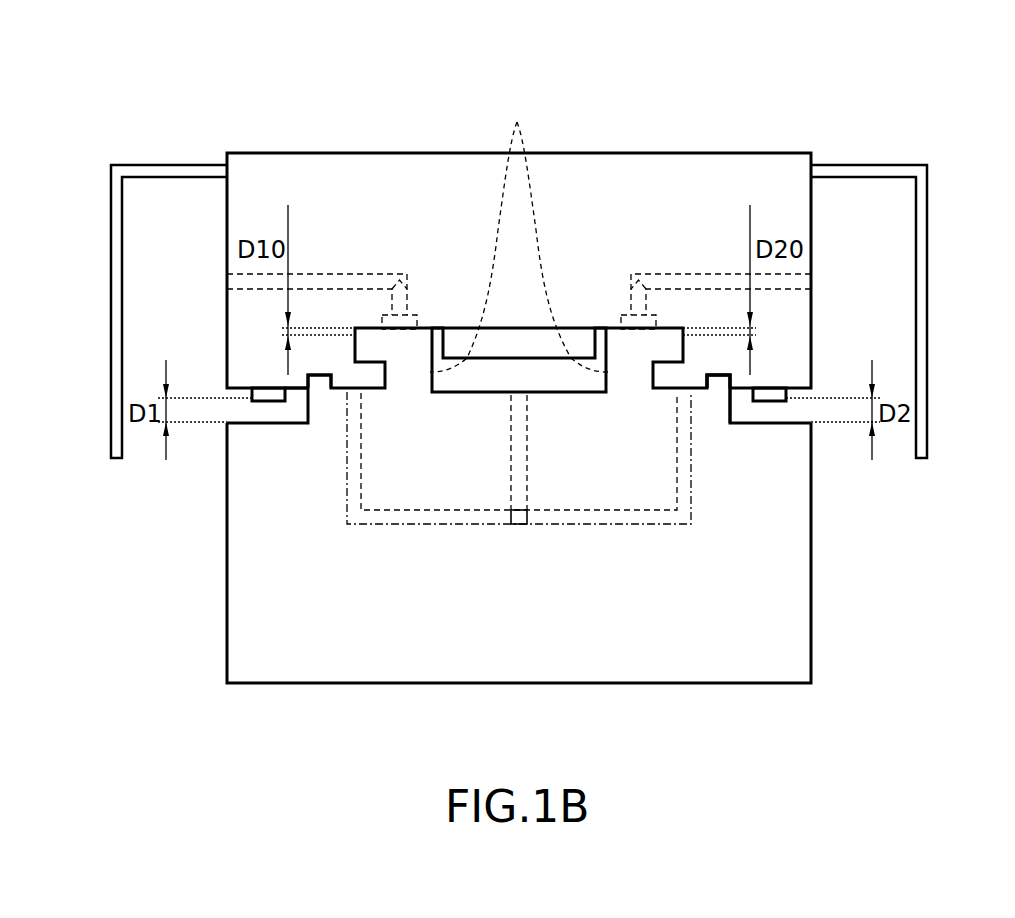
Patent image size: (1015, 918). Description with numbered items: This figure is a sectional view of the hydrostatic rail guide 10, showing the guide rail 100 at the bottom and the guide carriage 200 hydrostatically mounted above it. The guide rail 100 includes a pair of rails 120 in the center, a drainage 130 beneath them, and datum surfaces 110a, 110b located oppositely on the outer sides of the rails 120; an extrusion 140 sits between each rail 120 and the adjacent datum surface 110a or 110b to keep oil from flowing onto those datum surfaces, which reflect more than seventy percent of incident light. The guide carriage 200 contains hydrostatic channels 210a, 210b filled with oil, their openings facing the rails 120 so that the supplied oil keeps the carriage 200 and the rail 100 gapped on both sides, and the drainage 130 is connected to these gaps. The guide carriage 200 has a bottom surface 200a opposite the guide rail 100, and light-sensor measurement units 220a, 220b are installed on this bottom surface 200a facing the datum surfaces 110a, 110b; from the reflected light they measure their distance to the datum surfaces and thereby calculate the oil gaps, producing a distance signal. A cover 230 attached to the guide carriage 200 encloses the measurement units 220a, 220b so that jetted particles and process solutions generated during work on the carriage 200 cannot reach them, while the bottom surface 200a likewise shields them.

The hydrostatic rail guide 10 is at (997, 100).
The guide rail 100 is at (222, 582).
The datum surface 110a is at (250, 422).
The datum surface 110b is at (788, 422).
The rails 120 is at (519, 245).
The drainage 130 is at (692, 508).
The extrusions 140 is at (319, 375).
The guide carriage 200 is at (422, 145).
The bottom surface 200a is at (300, 390).
The hydrostatic channel 210a is at (310, 273).
The hydrostatic channel 210b is at (728, 273).
The measurement unit 220a is at (270, 392).
The measurement unit 220b is at (768, 392).
The cover 230 is at (171, 167).